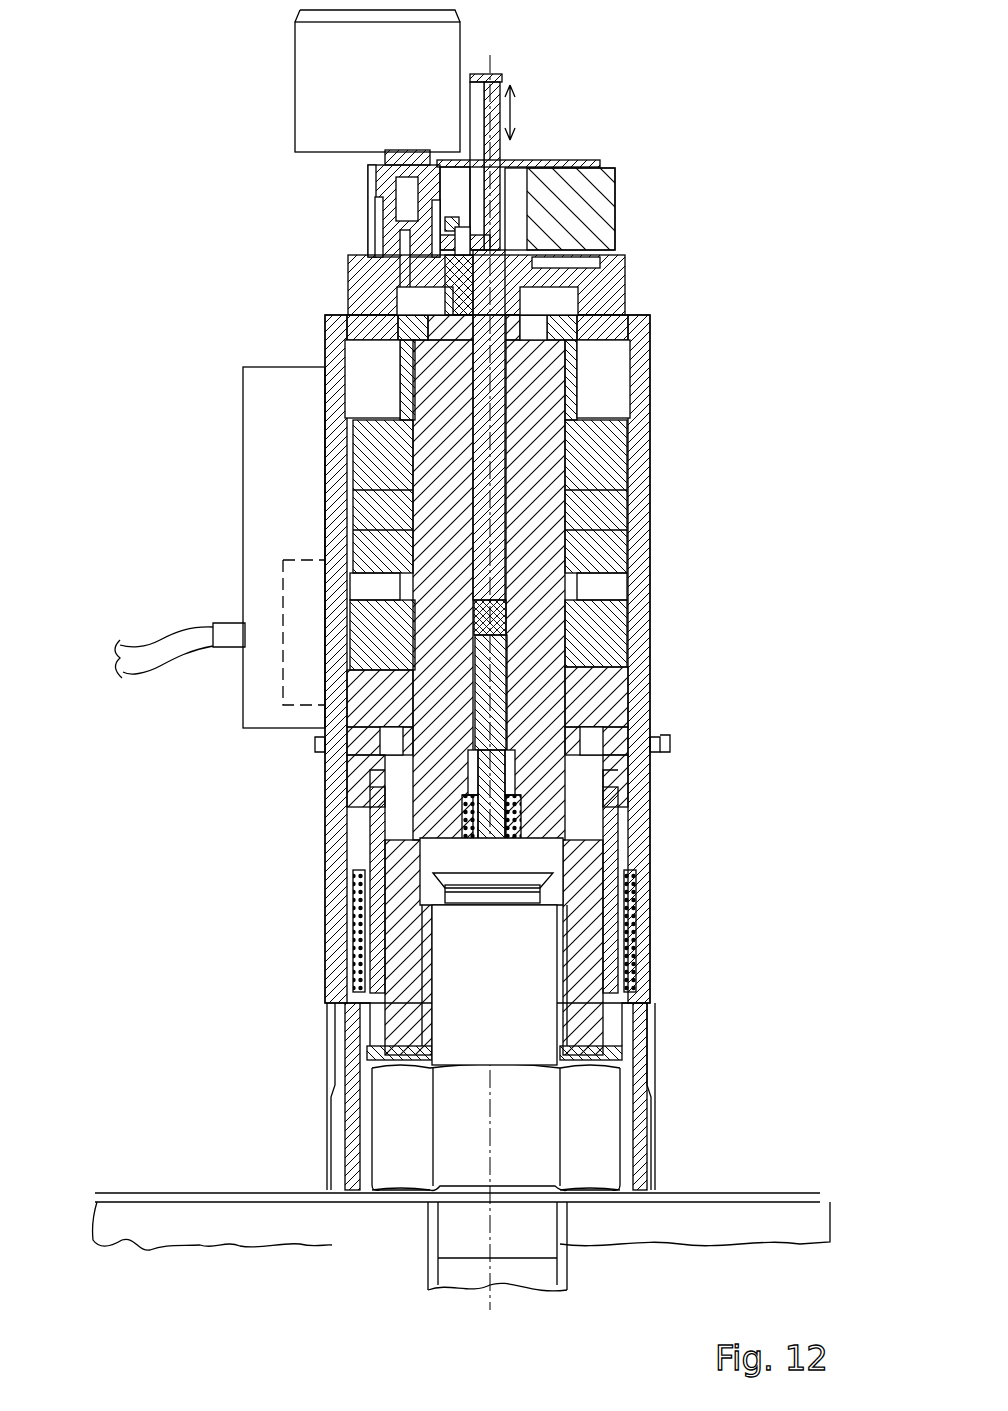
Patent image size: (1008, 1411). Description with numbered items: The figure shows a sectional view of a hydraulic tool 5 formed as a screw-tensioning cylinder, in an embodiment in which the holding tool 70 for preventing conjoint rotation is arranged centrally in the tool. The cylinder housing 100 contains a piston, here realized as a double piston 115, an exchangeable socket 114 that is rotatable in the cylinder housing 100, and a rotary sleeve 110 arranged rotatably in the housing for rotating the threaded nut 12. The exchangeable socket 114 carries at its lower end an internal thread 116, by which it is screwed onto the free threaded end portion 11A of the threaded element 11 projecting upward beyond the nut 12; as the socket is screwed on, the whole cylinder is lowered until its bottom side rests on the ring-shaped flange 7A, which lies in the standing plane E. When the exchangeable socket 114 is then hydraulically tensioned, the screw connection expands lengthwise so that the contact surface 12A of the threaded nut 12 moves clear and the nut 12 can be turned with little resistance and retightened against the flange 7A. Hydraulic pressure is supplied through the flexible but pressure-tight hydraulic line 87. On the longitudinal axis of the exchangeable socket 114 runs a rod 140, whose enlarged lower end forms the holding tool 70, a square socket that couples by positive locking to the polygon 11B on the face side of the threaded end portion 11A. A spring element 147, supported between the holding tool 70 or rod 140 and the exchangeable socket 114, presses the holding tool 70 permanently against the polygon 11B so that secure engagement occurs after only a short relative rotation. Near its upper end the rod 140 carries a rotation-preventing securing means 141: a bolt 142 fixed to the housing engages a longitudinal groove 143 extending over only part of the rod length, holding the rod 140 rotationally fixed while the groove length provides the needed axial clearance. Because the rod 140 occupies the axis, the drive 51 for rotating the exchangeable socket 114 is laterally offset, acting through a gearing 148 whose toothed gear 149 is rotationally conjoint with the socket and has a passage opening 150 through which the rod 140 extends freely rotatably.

The screw-tensioning cylinder 5 is at (670, 572).
The ring-shaped flange 7A is at (292, 1222).
The threaded element 11 is at (520, 1212).
The threaded end portion 11A is at (530, 975).
The polygon 11B is at (530, 915).
The threaded nut 12 is at (541, 1194).
The contact surface 12A is at (400, 1200).
The drive 51 is at (290, 92).
The holding tool 70 is at (523, 890).
The hydraulic line 87 is at (180, 630).
The cylinder housing 100 is at (632, 690).
The rotary sleeve 110 is at (630, 1045).
The exchangeable socket 114 is at (405, 835).
The double piston 115 is at (335, 500).
The internal thread 116 is at (392, 1043).
The rod 140 is at (634, 477).
The rotation-preventing securing means 141 is at (507, 207).
The bolt 142 is at (505, 237).
The longitudinal groove 143 is at (478, 190).
The spring element 147 is at (520, 815).
The gearing 148 is at (360, 237).
The toothed gear 149 is at (540, 290).
The passage opening 150 is at (470, 300).
The standing plane E is at (240, 1195).